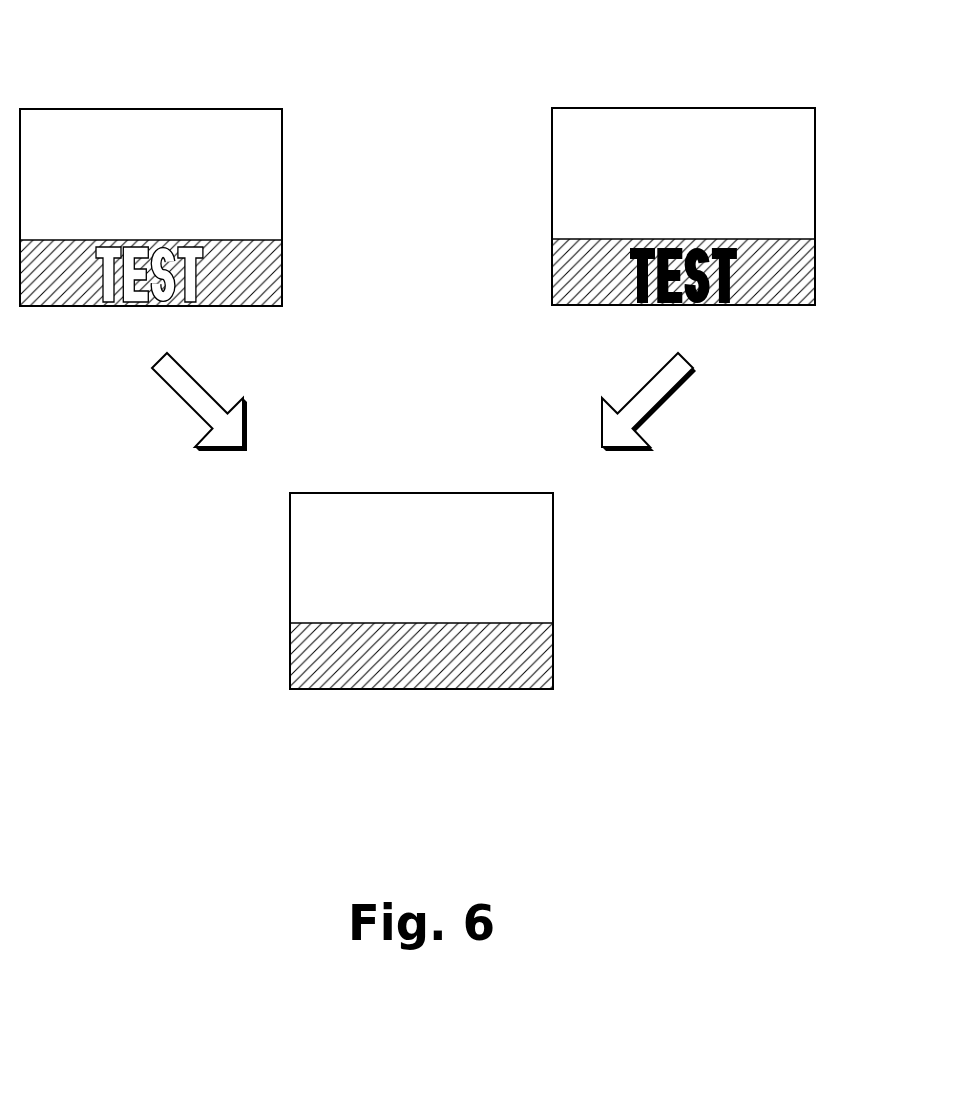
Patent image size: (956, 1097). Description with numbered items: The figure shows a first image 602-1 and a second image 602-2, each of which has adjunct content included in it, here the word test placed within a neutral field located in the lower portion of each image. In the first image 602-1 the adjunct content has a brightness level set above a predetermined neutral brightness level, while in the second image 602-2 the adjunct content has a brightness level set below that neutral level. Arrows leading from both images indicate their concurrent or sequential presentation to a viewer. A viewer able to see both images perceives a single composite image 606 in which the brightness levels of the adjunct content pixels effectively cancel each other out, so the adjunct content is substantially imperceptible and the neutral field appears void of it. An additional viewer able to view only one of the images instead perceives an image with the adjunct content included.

The first image 602-1 is at (143, 93).
The second image 602-2 is at (676, 93).
The composite image 606 is at (413, 479).